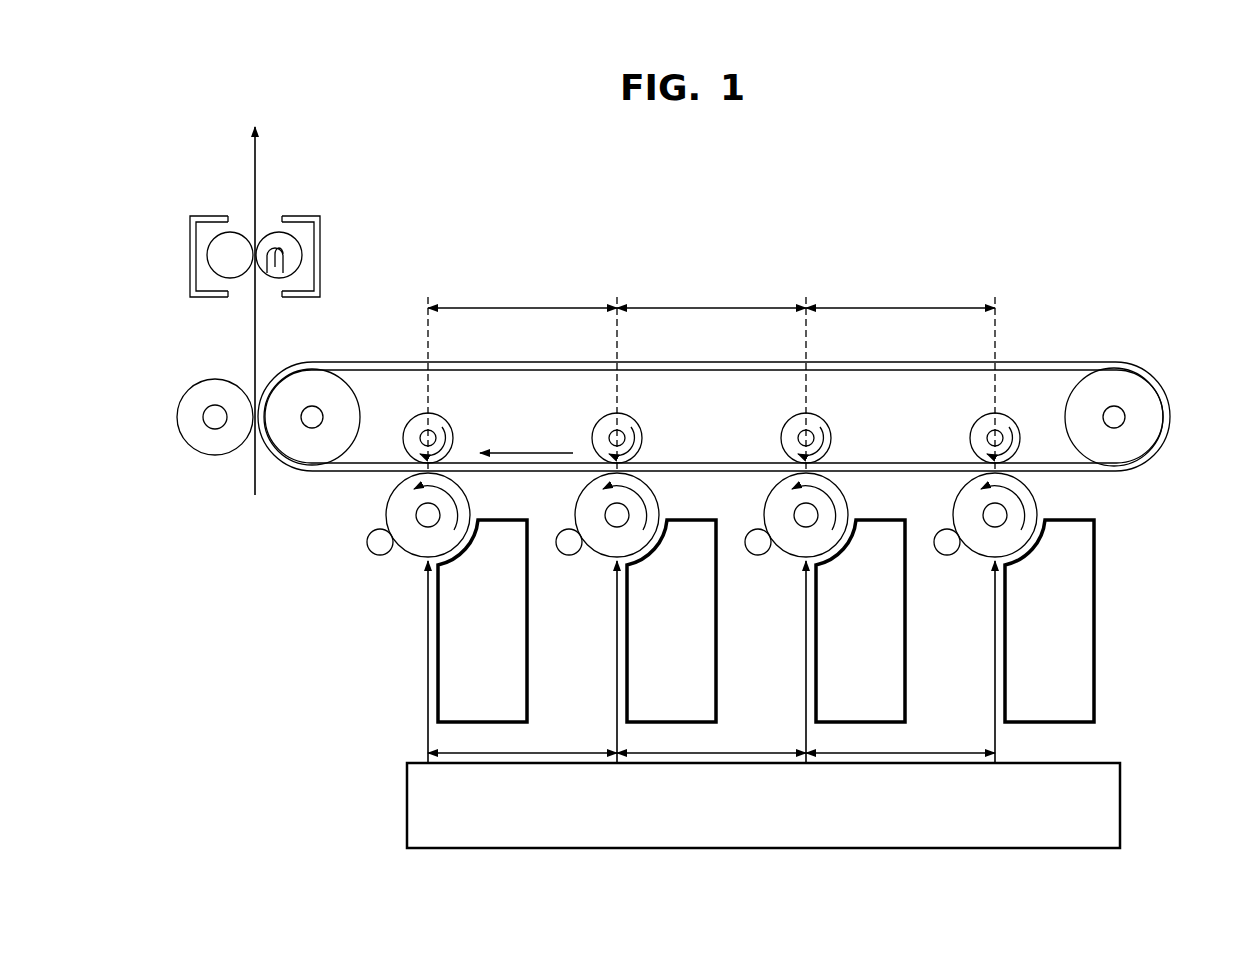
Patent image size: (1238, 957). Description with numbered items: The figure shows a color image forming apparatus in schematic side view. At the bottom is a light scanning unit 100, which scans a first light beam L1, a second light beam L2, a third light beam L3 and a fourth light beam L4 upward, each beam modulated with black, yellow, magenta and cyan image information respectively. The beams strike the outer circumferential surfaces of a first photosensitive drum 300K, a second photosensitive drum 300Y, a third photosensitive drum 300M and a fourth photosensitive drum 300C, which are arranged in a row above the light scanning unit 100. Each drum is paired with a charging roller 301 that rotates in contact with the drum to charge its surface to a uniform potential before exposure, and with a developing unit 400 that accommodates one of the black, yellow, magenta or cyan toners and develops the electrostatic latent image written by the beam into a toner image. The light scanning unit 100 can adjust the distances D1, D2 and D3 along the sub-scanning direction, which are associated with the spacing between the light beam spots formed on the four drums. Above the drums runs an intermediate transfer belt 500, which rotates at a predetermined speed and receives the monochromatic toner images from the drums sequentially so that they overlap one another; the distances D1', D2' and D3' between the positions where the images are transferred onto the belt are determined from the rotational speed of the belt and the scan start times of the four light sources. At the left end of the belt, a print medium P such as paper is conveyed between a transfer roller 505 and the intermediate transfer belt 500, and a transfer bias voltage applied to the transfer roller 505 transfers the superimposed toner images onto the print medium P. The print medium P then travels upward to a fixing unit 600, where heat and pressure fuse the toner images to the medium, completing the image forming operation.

The light scanning unit 100 is at (1120, 808).
The first photosensitive drum 300K is at (387, 502).
The second photosensitive drum 300Y is at (578, 505).
The third photosensitive drum 300M is at (766, 505).
The fourth photosensitive drum 300C is at (1053, 614).
The charging roller 301 is at (947, 557).
The developing unit 400 is at (1050, 722).
The intermediate transfer belt 500 is at (1148, 372).
The transfer roller 505 is at (178, 418).
The fixing unit 600 is at (177, 264).
The print medium P is at (250, 331).
The first light beam L1 is at (428, 701).
The second light beam L2 is at (617, 665).
The third light beam L3 is at (806, 665).
The fourth light beam L4 is at (995, 665).
The distance along sub-scanning direction D1 is at (522, 740).
The distance along sub-scanning direction D2 is at (711, 740).
The distance along sub-scanning direction D3 is at (900, 740).
The distance between transfer positions D1' is at (522, 292).
The distance between transfer positions D2' is at (711, 292).
The distance between transfer positions D3' is at (900, 292).